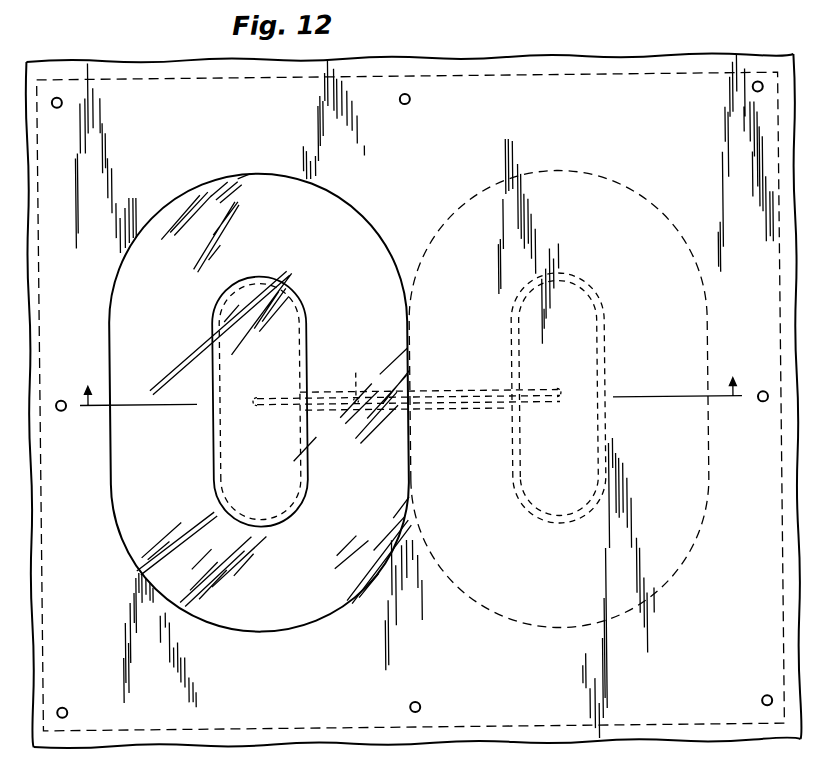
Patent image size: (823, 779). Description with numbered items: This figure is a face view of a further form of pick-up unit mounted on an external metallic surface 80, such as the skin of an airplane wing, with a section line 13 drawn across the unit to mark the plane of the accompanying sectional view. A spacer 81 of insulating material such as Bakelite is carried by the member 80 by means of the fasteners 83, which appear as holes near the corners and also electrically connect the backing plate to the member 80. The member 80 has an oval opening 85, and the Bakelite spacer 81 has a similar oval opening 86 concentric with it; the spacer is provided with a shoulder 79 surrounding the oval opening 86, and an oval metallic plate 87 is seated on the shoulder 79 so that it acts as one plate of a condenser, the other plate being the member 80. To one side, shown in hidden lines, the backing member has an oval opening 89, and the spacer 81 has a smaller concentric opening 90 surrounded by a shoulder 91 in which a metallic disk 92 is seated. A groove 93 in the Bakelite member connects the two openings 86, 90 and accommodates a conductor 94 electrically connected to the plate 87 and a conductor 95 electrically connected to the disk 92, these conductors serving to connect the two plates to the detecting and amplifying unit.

The section line 13 is at (411, 408).
The shoulder 79 is at (307, 362).
The external metallic surface 80 is at (676, 308).
The spacer 81 is at (233, 705).
The fasteners 83 is at (759, 701).
The oval opening 85 is at (113, 463).
The oval opening 86 is at (228, 439).
The oval metallic plate 87 is at (239, 468).
The oval opening 89 is at (707, 483).
The opening 90 is at (597, 445).
The shoulder 91 is at (607, 405).
The metallic disk 92 is at (587, 378).
The groove 93 is at (362, 432).
The conductor 94 is at (357, 376).
The conductor 95 is at (505, 411).